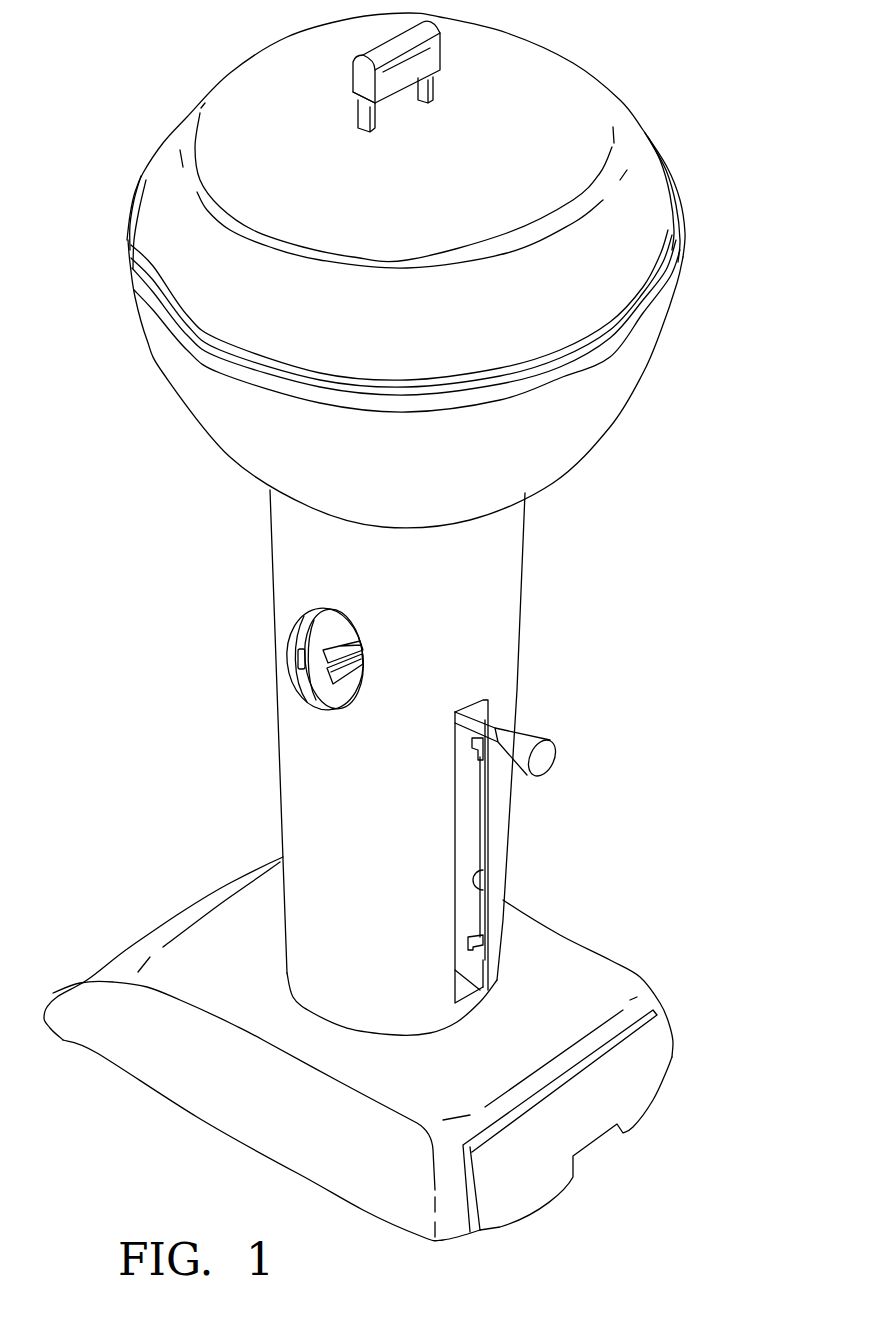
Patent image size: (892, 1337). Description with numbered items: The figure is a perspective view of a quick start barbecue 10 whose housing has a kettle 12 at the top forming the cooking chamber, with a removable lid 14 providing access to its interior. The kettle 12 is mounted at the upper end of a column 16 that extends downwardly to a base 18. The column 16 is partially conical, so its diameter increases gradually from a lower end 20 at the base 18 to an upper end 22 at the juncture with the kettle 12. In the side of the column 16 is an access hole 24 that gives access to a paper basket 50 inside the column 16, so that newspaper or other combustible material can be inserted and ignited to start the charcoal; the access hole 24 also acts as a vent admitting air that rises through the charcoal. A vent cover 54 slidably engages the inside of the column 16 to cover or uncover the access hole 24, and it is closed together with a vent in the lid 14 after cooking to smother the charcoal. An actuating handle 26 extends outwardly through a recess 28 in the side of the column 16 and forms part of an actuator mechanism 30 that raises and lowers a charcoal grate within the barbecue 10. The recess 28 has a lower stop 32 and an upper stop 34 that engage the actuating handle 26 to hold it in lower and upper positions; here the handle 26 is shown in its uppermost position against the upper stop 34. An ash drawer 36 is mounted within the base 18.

The quick start barbecue 10 is at (658, 612).
The kettle 12 is at (613, 400).
The removable lid 14 is at (560, 85).
The column 16 is at (300, 783).
The base 18 is at (187, 1080).
The lower end 20 is at (397, 1022).
The upper end 22 is at (513, 517).
The access hole 24 is at (343, 627).
The actuating handle 26 is at (557, 757).
The recess 28 is at (480, 882).
The actuator mechanism 30 is at (470, 833).
The lower stop 32 is at (480, 948).
The upper stop 34 is at (475, 753).
The ash drawer 36 is at (637, 1075).
The paper basket 50 is at (325, 673).
The vent cover 54 is at (300, 630).